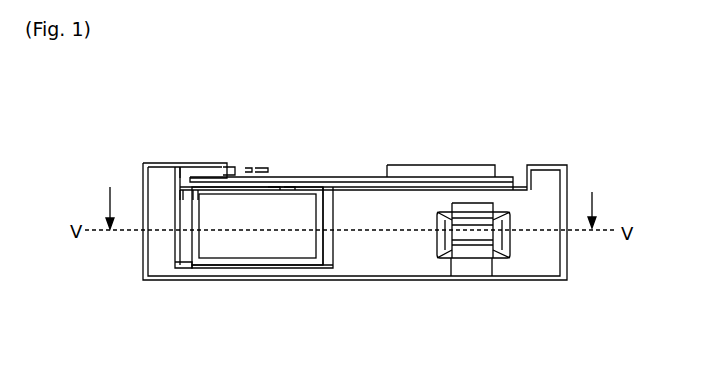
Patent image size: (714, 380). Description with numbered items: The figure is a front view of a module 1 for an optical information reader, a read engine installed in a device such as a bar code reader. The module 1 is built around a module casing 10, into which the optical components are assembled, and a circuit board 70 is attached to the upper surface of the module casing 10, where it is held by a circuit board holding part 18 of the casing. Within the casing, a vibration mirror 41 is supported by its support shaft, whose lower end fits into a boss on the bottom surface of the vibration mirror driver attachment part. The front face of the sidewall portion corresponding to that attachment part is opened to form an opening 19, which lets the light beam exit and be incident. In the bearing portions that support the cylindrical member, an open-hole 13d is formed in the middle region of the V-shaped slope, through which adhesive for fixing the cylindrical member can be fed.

The module 1 is at (493, 137).
The module casing 10 is at (373, 255).
The open-hole 13d is at (475, 257).
The circuit board holding part 18 is at (195, 162).
The opening 19 is at (323, 243).
The vibration mirror 41 is at (230, 245).
The circuit board 70 is at (343, 180).